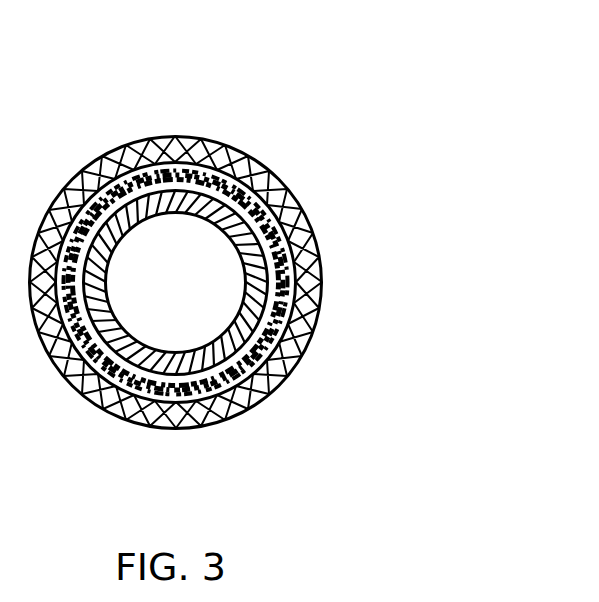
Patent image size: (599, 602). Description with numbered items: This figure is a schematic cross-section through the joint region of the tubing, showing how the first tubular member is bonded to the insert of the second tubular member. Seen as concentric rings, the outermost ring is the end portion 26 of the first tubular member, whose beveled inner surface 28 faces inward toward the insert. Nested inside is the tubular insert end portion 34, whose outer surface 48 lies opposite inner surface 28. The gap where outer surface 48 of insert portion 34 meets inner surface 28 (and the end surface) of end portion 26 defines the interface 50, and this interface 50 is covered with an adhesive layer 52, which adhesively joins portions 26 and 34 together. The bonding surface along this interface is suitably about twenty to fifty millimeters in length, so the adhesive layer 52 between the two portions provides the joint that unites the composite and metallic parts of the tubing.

The end portion 26 is at (250, 152).
The inner surface 28 is at (317, 242).
The tubular insert end portion 34 is at (293, 378).
The outer surface 48 is at (325, 287).
The interface 50 is at (290, 192).
The adhesive layer 52 is at (315, 335).